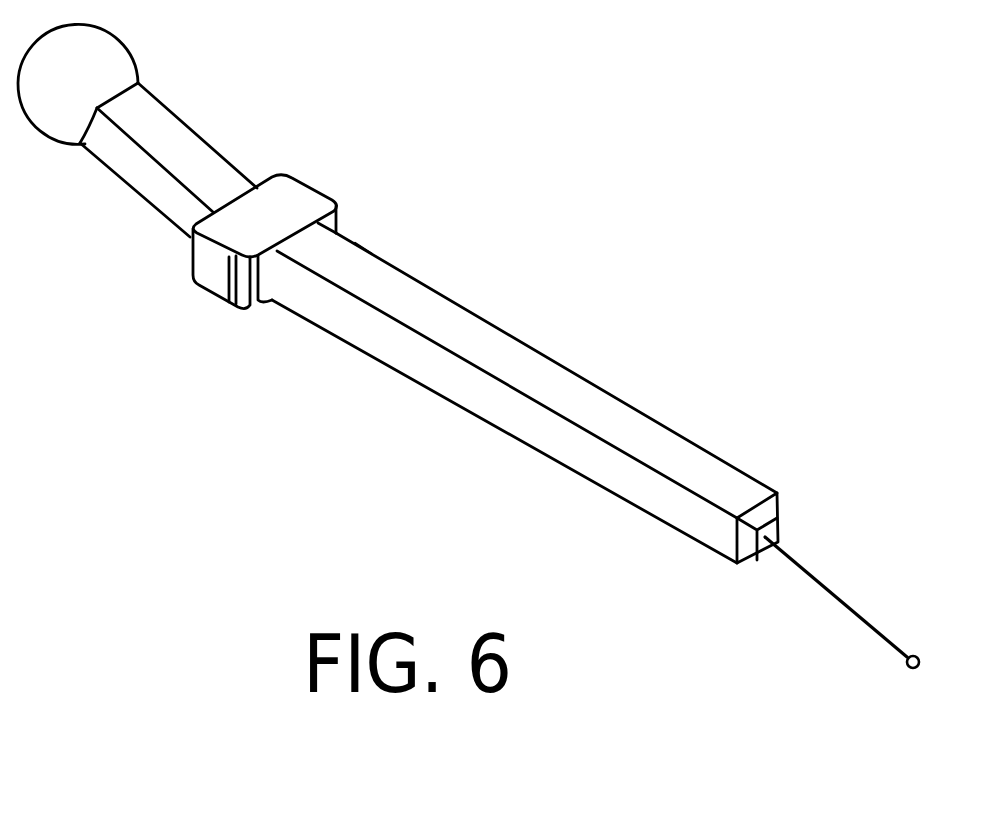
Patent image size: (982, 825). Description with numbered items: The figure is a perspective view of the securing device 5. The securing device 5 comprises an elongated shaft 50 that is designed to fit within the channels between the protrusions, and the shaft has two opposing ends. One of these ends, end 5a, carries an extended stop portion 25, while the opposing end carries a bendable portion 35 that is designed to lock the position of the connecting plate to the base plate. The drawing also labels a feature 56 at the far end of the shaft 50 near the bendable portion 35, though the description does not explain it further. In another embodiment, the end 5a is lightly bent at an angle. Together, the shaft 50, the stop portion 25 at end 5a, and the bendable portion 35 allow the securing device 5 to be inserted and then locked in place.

The securing device 5 is at (490, 237).
The end of the shaft 5a is at (363, 250).
The extended stop portion 25 is at (212, 280).
The elongated shaft 50 is at (553, 375).
The distal end 56 is at (737, 477).
The bendable portion 35 is at (848, 617).